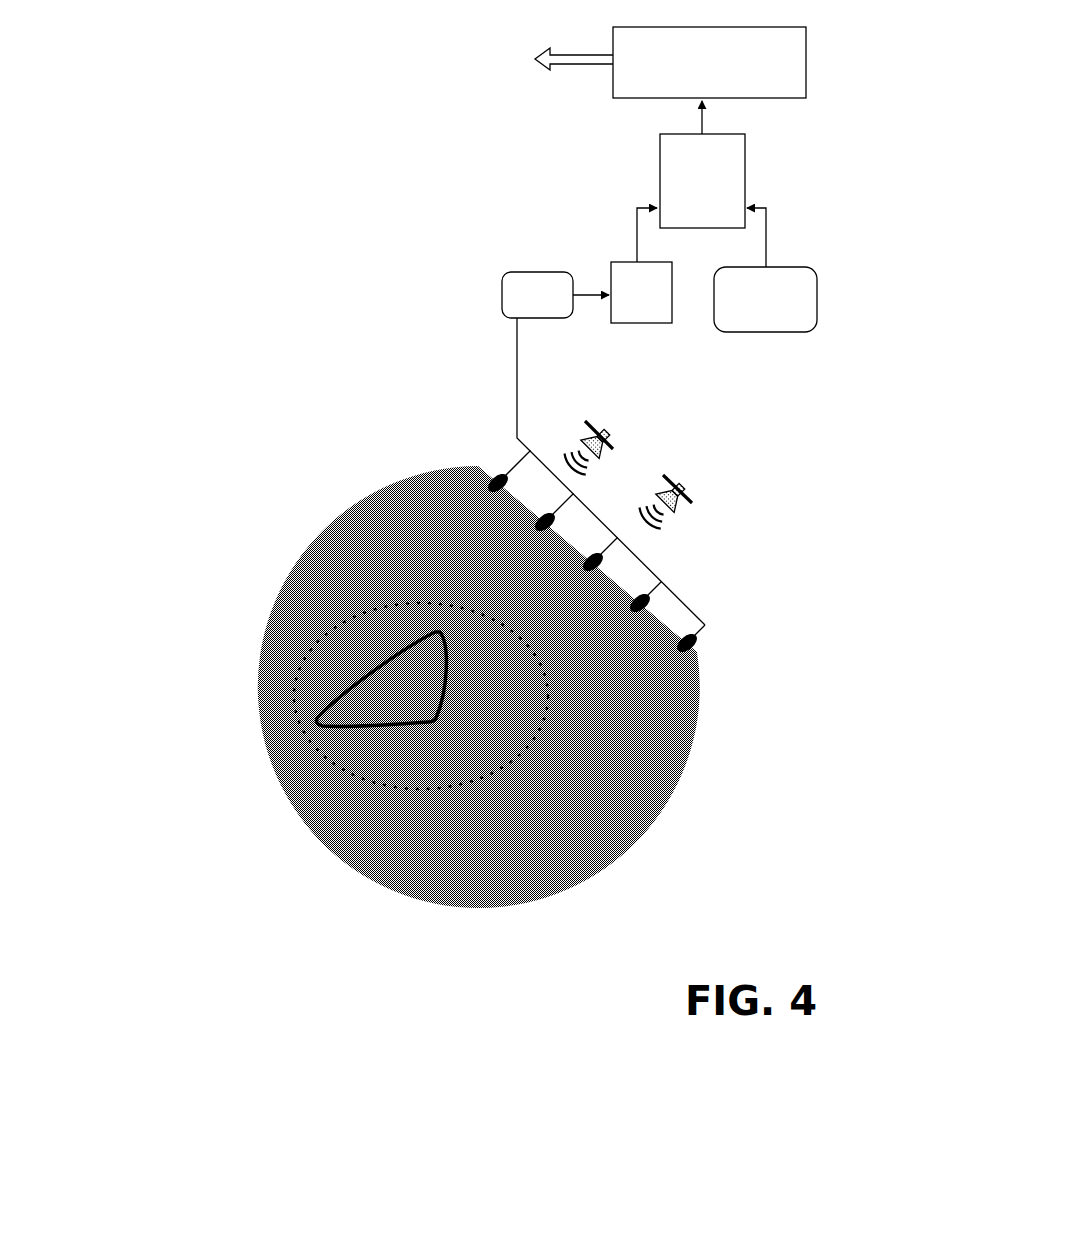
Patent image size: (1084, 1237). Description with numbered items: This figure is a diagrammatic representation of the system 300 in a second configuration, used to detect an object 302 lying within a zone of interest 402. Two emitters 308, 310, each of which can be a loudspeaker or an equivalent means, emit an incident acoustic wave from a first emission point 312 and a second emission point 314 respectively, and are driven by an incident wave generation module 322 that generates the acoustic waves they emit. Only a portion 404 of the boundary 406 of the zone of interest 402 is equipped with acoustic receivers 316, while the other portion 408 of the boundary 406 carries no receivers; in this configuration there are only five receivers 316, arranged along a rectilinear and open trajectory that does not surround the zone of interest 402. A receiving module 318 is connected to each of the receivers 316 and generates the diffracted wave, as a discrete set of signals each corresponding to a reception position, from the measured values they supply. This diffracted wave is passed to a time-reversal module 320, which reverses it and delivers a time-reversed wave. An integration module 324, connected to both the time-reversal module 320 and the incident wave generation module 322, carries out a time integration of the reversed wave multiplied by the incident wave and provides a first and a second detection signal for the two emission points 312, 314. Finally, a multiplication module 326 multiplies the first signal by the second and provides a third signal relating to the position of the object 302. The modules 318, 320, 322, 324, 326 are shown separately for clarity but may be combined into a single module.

The system 300 is at (323, 991).
The object 302 is at (375, 668).
The first emitter 308 is at (586, 434).
The second emitter 310 is at (700, 508).
The first emission point 312 is at (614, 424).
The second emission point 314 is at (698, 480).
The acoustic receivers 316 is at (765, 672).
The receiving module 318 is at (523, 274).
The time-reversal module 320 is at (623, 262).
The incident wave generation module 322 is at (813, 272).
The integration module 324 is at (745, 165).
The multiplication module 326 is at (806, 60).
The zone of interest 402 is at (360, 577).
The portion of the boundary 404 is at (623, 573).
The boundary 406 is at (712, 754).
The other portion of the boundary 408 is at (673, 787).